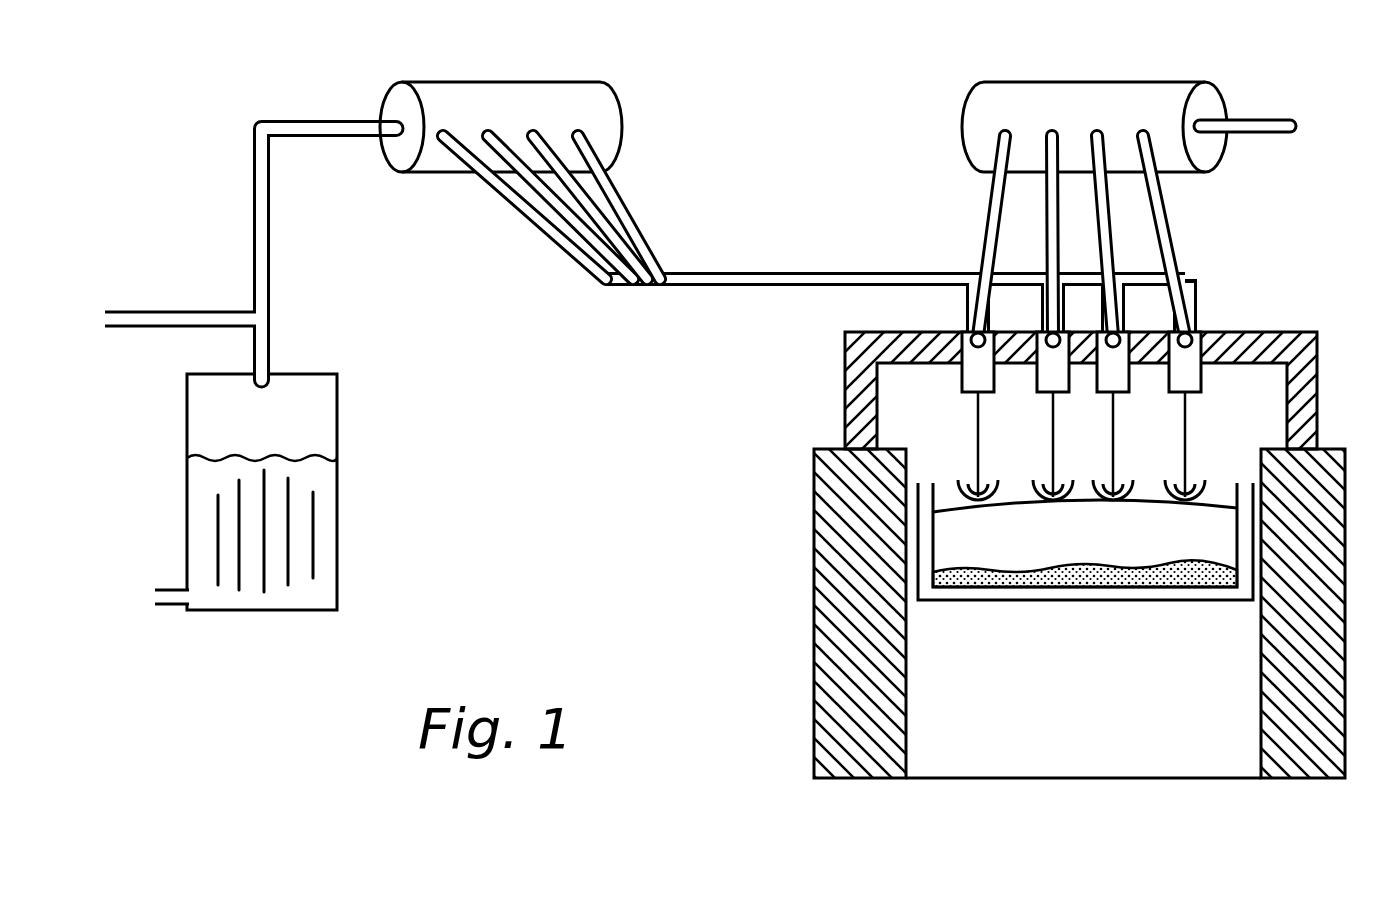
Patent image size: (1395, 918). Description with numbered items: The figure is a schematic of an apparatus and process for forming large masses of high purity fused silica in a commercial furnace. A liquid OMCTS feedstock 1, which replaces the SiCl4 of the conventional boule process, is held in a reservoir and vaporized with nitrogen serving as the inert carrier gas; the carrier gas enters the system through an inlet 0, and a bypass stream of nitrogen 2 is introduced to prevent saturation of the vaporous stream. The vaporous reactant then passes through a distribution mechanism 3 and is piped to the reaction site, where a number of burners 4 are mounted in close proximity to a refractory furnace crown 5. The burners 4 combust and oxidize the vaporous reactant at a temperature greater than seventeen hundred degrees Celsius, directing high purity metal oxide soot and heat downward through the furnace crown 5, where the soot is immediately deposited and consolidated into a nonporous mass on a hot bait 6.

The gas inlet 0 is at (1312, 126).
The OMCTS feedstock 1 is at (268, 433).
The bypass stream of nitrogen 2 is at (92, 319).
The distribution mechanism 3 is at (550, 82).
The burners 4 is at (1046, 378).
The furnace crown 5 is at (845, 391).
The hot bait 6 is at (1081, 600).